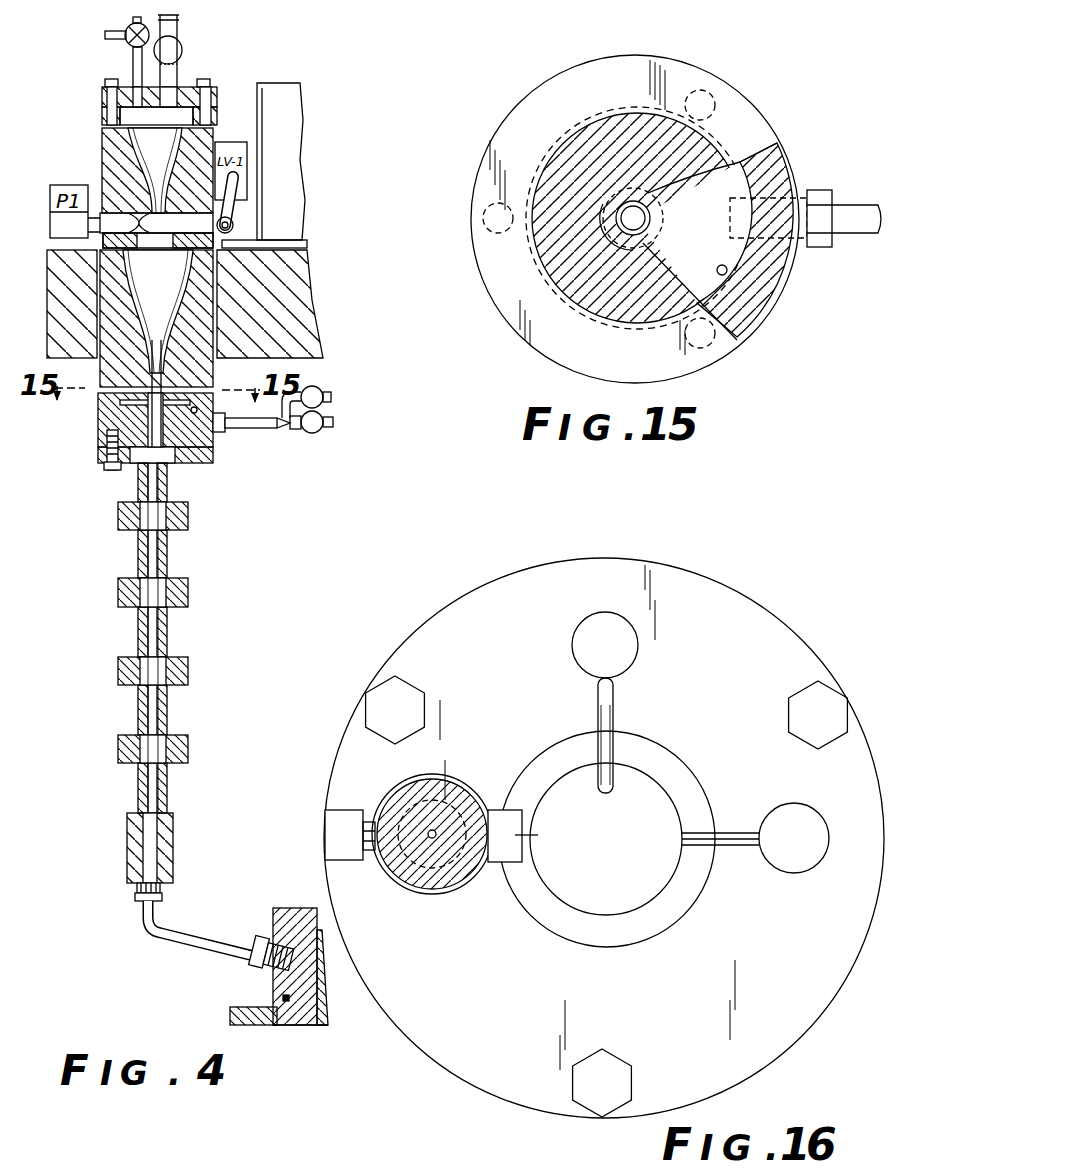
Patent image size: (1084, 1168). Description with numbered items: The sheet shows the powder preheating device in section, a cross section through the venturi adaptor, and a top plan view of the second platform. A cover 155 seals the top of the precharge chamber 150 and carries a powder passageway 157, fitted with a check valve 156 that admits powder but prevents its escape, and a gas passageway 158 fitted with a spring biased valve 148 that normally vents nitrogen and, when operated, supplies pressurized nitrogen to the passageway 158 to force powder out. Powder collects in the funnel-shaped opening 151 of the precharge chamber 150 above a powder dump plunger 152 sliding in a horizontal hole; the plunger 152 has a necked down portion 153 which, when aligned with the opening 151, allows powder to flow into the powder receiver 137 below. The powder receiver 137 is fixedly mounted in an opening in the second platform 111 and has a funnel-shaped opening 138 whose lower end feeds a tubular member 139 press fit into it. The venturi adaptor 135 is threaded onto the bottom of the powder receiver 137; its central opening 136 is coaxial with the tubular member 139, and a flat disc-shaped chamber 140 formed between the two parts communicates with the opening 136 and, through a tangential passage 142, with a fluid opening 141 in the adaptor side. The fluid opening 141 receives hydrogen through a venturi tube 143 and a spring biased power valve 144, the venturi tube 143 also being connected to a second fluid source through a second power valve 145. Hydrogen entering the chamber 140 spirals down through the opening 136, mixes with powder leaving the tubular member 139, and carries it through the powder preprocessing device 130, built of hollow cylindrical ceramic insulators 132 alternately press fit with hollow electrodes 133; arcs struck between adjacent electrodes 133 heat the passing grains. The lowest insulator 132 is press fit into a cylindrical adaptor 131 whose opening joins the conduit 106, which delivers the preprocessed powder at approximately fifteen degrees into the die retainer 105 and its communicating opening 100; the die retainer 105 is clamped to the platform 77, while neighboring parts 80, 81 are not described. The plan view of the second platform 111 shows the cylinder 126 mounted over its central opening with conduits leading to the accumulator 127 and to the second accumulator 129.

In FIG. 4, the spring biased valve 148 is at (125, 31).
In FIG. 4, the check valve 156 is at (181, 44).
In FIG. 4, the gas passageway 158 is at (135, 86).
In FIG. 4, the powder passageway 157 is at (173, 85).
In FIG. 4, the cover 155 is at (104, 97).
In FIG. 4, the funnel-shaped opening 151 is at (140, 118).
In FIG. 4, the precharge chamber 150 is at (107, 135).
In FIG. 16, the precharge chamber 150 is at (450, 790).
In FIG. 4, the powder dump plunger 152 is at (157, 170).
In FIG. 4, the necked down portion 153 is at (150, 226).
In FIG. 4, the second platform 111 is at (310, 292).
In FIG. 16, the second platform 111 is at (495, 588).
In FIG. 4, the powder receiver 137 is at (210, 347).
In FIG. 4, the funnel-shaped opening 138 is at (180, 311).
In FIG. 4, the tubular member 139 is at (165, 381).
In FIG. 15, the tubular member 139 is at (648, 220).
In FIG. 4, the passage 142 is at (196, 408).
In FIG. 15, the passage 142 is at (730, 275).
In FIG. 4, the chamber 140 is at (124, 403).
In FIG. 15, the chamber 140 is at (735, 170).
In FIG. 4, the central opening 136 is at (150, 422).
In FIG. 15, the central opening 136 is at (653, 204).
In FIG. 4, the venturi adaptor 135 is at (108, 452).
In FIG. 15, the venturi adaptor 135 is at (532, 98).
In FIG. 4, the fluid opening 141 is at (219, 433).
In FIG. 15, the fluid opening 141 is at (806, 196).
In FIG. 4, the venturi tube 143 is at (287, 426).
In FIG. 4, the spring biased power valve 144 is at (325, 419).
In FIG. 4, the spring biased power valve 145 is at (325, 394).
In FIG. 4, the ceramic insulator 132 is at (137, 550).
In FIG. 4, the electrode 133 is at (188, 607).
In FIG. 4, the powder preprocessing device 130 is at (176, 709).
In FIG. 4, the adaptor 131 is at (127, 850).
In FIG. 4, the conduit 106 is at (190, 938).
In FIG. 4, the die retainer 105 is at (290, 910).
In FIG. 4, the opening 100 is at (333, 973).
In FIG. 4, the seal 81 is at (270, 1000).
In FIG. 4, the platform 77 is at (230, 1018).
In FIG. 4, the base 80 is at (325, 1027).
In FIG. 16, the second accumulator 129 is at (634, 645).
In FIG. 16, the cylinder 126 is at (640, 792).
In FIG. 16, the accumulator 127 is at (794, 803).